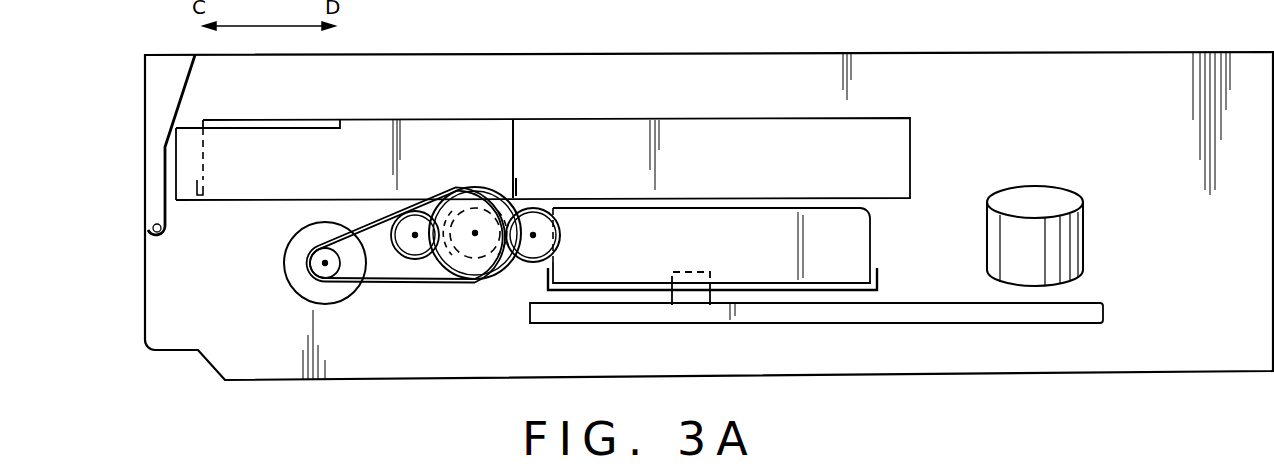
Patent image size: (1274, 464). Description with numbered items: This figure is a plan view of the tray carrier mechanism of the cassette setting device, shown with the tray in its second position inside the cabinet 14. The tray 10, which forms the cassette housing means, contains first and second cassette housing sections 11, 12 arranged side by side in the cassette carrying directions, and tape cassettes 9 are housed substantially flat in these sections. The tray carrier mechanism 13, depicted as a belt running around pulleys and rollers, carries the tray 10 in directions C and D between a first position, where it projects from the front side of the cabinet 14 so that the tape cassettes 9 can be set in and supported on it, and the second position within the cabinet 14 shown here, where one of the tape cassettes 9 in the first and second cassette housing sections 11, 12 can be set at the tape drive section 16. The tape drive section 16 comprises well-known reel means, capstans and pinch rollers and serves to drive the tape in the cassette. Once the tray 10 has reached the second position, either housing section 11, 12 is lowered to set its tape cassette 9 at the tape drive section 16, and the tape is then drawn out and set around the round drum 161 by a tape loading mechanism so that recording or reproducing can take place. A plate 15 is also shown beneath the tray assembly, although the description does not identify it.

The tape cassette 9 is at (435, 125).
The tray 10 is at (917, 162).
The first cassette housing section 11 is at (848, 290).
The second cassette housing section 12 is at (272, 198).
The tray carrier mechanism 13 is at (390, 290).
The cabinet 14 is at (775, 52).
The base plate 15 is at (990, 315).
The tape drive section 16 is at (655, 272).
The round drum 161 is at (1085, 232).